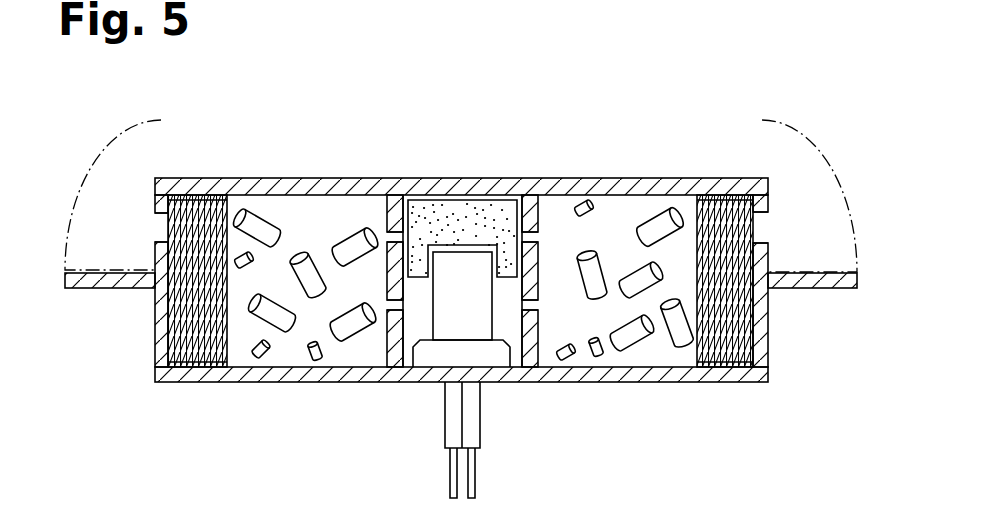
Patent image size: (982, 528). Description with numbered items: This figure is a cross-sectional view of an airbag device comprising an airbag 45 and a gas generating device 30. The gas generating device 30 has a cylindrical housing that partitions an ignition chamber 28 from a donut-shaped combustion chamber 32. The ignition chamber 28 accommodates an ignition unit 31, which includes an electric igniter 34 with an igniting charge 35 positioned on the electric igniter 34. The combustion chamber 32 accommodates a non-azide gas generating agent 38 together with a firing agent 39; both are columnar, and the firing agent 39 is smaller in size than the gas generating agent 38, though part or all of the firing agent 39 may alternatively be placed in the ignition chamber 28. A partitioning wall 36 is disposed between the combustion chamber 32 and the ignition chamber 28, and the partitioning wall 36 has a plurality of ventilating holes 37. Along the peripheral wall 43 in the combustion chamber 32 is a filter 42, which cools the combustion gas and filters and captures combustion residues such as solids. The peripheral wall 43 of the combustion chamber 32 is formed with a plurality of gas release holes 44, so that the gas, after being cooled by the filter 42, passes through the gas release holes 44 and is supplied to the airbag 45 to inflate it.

The ignition chamber 28 is at (517, 318).
The gas generating device 30 is at (520, 158).
The ignition unit 31 is at (427, 200).
The combustion chamber 32 is at (327, 228).
The electric igniter 34 is at (437, 320).
The igniting charge 35 is at (475, 205).
The partitioning wall 36 is at (538, 240).
The ventilating holes 37 is at (535, 308).
The gas generating agent 38 is at (587, 253).
The firing agent 39 is at (595, 360).
The filter 42 is at (755, 310).
The peripheral wall 43 is at (763, 257).
The gas release holes 44 is at (767, 220).
The airbag 45 is at (833, 188).